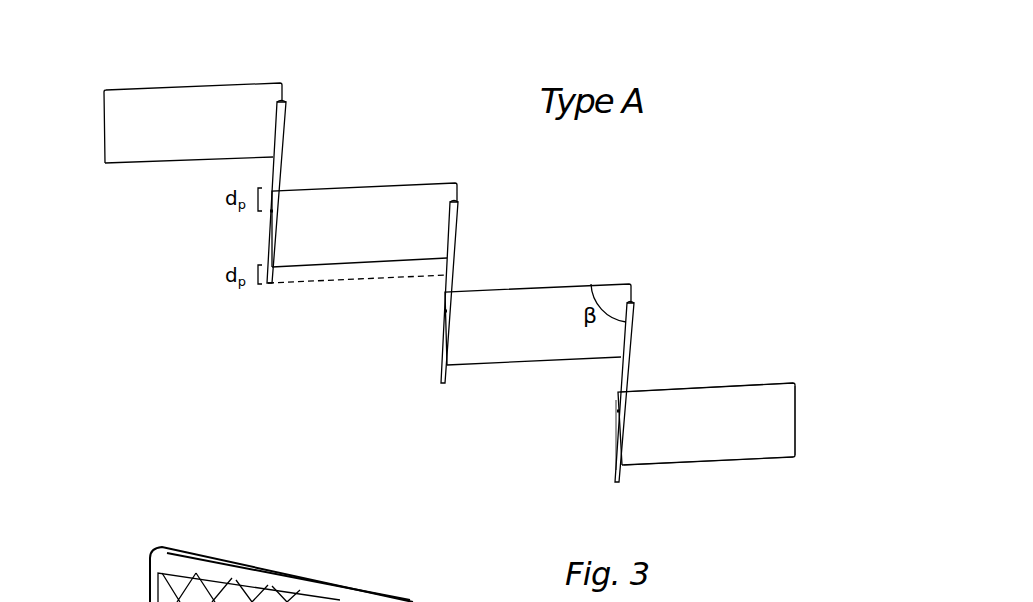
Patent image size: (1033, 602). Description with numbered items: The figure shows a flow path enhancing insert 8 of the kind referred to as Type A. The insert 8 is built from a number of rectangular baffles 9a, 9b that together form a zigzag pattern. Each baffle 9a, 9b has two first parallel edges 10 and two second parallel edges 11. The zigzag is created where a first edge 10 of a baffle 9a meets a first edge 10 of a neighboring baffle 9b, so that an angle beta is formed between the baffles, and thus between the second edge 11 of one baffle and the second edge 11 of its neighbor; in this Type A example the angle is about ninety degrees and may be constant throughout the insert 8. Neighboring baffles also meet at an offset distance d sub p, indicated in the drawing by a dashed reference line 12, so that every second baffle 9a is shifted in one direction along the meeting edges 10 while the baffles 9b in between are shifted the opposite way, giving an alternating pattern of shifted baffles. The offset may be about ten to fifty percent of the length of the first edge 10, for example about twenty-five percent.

The flow path enhancing insert 8 is at (137, 355).
The baffle 9a is at (205, 73).
The baffle 9b is at (263, 163).
The first parallel edges 10 is at (612, 462).
The second parallel edges 11 is at (705, 383).
The overlap line 12 is at (347, 275).